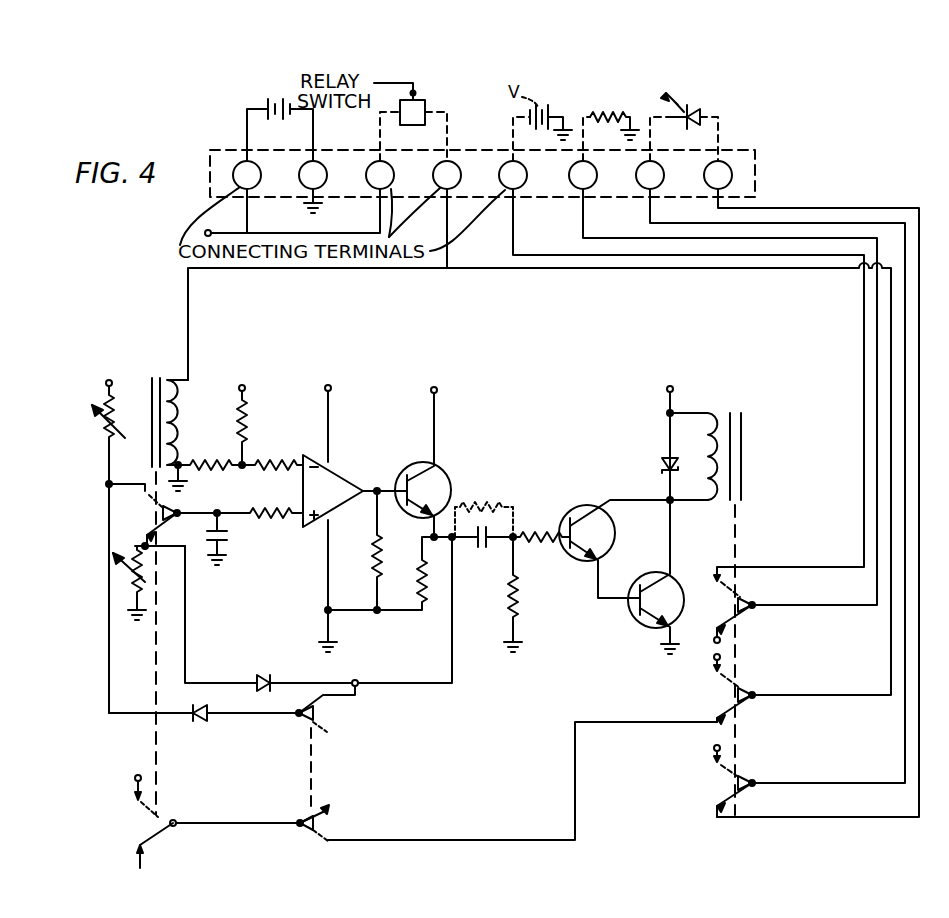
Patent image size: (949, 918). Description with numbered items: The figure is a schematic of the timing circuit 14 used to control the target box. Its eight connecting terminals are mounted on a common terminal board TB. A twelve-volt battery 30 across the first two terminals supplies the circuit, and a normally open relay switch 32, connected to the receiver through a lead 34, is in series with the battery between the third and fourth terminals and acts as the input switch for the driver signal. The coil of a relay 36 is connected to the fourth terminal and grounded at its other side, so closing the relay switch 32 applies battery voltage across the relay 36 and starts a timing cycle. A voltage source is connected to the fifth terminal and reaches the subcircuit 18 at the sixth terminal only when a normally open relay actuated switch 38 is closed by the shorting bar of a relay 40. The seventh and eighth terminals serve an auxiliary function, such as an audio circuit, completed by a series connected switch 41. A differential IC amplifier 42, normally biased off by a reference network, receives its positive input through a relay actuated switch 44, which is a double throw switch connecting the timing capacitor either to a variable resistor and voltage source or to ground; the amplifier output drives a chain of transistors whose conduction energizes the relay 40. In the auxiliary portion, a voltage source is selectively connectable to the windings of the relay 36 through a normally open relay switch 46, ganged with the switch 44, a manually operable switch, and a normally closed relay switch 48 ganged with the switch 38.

The timing circuit 14 is at (549, 334).
The subcircuit 18 is at (607, 113).
The battery 30 is at (272, 118).
The relay switch 32 is at (408, 108).
The lead 34 is at (413, 93).
The relay 36 is at (157, 378).
The relay actuated switch 38 is at (731, 614).
The relay 40 is at (745, 468).
The series connected switch 41 is at (715, 801).
The differential IC amplifier 42 is at (333, 470).
The relay actuated switch 44 is at (144, 516).
The relay switch 46 is at (147, 840).
The relay switch 48 is at (738, 707).
The terminal board TB is at (746, 156).